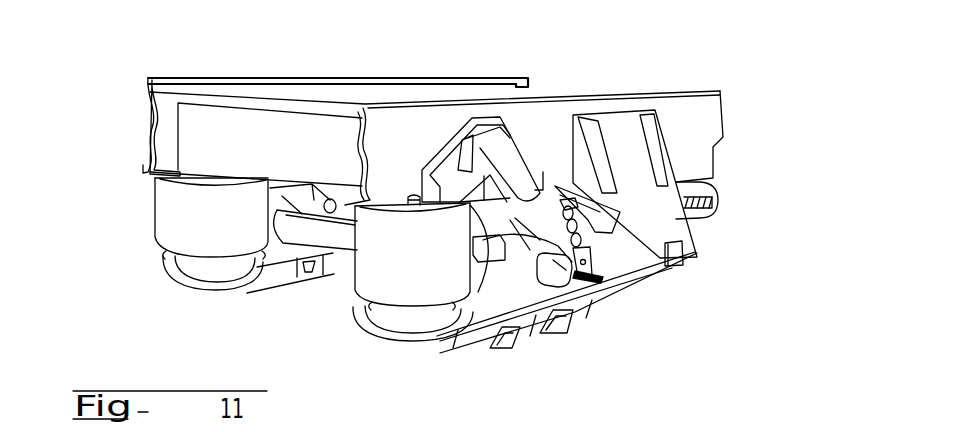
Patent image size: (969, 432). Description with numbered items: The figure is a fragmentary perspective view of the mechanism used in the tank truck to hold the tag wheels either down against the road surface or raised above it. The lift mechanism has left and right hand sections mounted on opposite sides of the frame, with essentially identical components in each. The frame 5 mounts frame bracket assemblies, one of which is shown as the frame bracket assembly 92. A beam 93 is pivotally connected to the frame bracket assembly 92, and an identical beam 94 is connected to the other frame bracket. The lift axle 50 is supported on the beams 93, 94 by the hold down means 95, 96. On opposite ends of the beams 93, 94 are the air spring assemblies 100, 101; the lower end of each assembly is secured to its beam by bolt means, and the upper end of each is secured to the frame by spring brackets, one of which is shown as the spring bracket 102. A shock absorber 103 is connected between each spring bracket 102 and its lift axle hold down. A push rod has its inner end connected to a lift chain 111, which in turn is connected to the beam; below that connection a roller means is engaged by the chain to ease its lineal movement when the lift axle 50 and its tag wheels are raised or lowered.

The frame 5 is at (141, 127).
The lift axle 50 is at (548, 264).
The frame bracket assembly 92 is at (708, 150).
The beam 93 is at (510, 318).
The beam 94 is at (163, 272).
The hold down means 95 is at (360, 334).
The hold down means 96 is at (253, 283).
The air spring assembly 100 is at (155, 207).
The air spring assembly 101 is at (354, 290).
The spring bracket 102 is at (450, 167).
The shock absorber 103 is at (508, 163).
The lift chain 111 is at (623, 277).